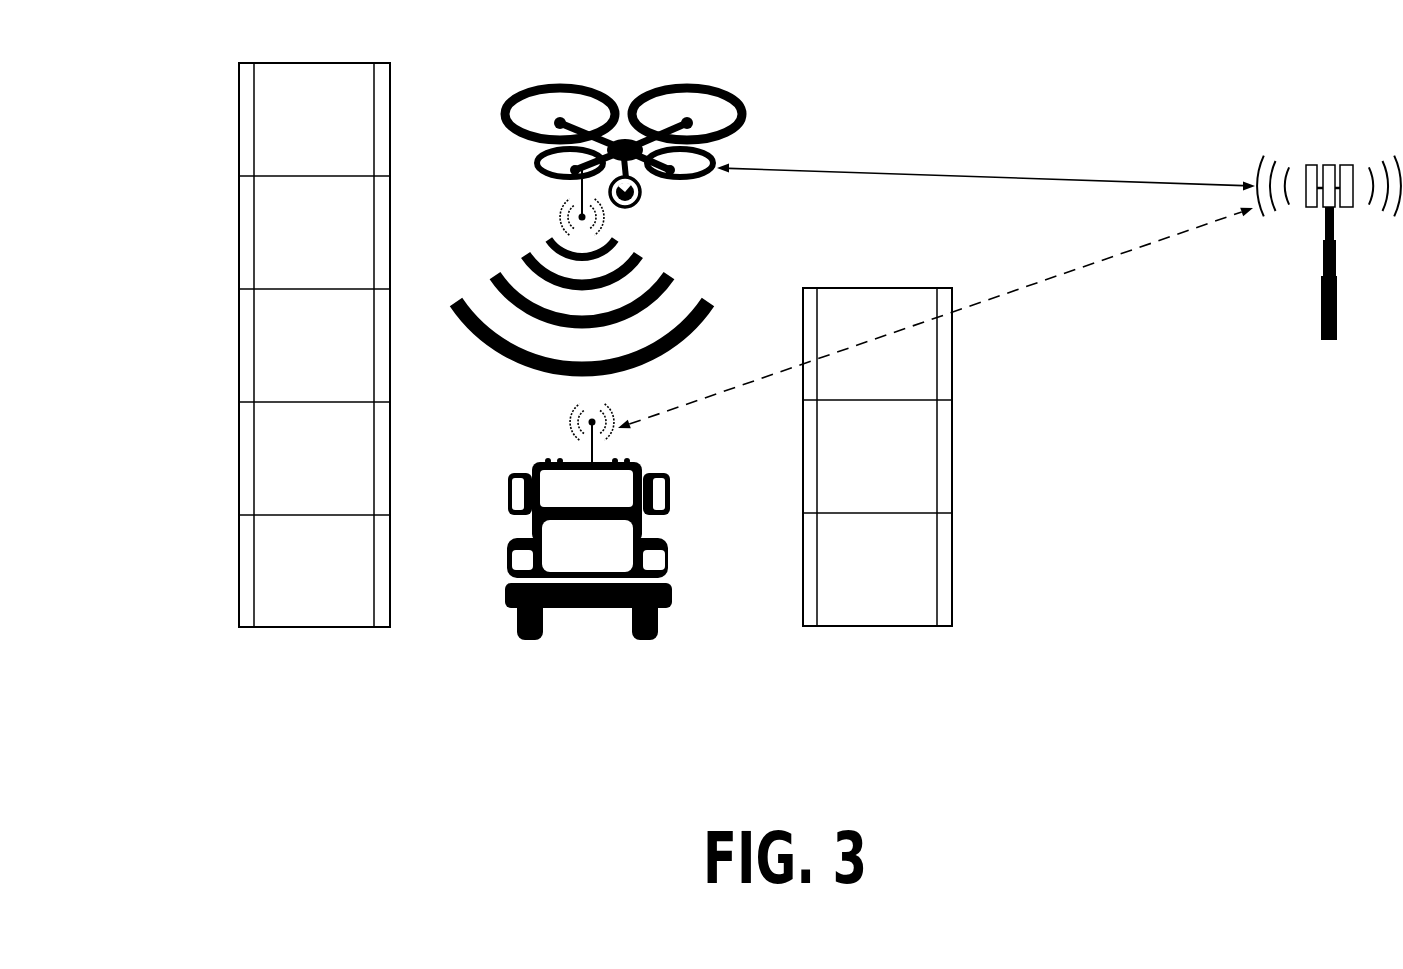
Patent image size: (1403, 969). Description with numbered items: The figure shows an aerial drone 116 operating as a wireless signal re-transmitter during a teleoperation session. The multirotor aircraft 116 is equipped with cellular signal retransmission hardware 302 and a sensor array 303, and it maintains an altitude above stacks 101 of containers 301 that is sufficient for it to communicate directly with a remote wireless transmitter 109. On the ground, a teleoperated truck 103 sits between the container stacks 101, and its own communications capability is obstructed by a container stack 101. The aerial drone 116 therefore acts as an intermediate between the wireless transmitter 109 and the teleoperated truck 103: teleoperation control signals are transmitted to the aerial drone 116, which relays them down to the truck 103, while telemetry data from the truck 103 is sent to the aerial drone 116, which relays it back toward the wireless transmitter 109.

The stack of containers 101 is at (583, 345).
The container 301 is at (331, 126).
The aerial drone 116 is at (641, 84).
The cellular signal retransmission hardware 302 is at (551, 226).
The sensor array 303 is at (688, 236).
The teleoperated truck 103 is at (605, 647).
The remote wireless transmitter 109 is at (1345, 142).